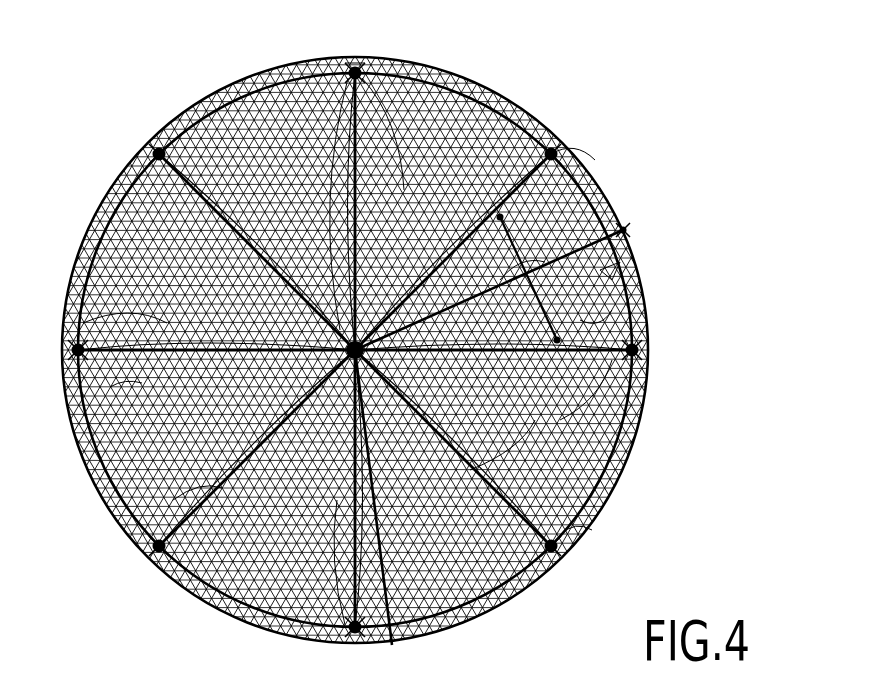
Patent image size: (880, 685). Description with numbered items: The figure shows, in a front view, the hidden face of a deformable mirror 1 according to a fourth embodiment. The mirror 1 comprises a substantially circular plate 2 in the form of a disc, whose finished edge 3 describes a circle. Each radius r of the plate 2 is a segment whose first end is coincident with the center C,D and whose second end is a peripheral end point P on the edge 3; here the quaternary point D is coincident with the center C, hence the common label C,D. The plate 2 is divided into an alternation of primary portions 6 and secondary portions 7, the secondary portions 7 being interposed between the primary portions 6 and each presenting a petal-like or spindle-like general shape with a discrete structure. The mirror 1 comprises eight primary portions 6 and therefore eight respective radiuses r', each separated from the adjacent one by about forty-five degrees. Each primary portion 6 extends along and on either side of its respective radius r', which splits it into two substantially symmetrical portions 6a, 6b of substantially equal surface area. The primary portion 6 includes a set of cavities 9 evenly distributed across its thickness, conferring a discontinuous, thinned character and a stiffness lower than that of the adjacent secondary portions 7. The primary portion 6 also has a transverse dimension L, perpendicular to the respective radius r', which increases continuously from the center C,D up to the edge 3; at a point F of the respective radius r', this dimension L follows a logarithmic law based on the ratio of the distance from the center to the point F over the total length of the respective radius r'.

The deformable mirror 1 is at (693, 95).
The plate 2 is at (117, 187).
The edge 3 is at (613, 493).
The primary portion 6 is at (253, 77).
The portion of primary portion 6a is at (597, 323).
The portion of primary portion 6b is at (563, 148).
The secondary portion 7 is at (197, 100).
The cavities 9 is at (633, 263).
The center and quaternary point C,D is at (343, 60).
The peripheral end point P is at (632, 235).
The transverse dimension L is at (587, 290).
The point F is at (587, 540).
The radius r is at (393, 509).
The respective radius r' is at (501, 260).